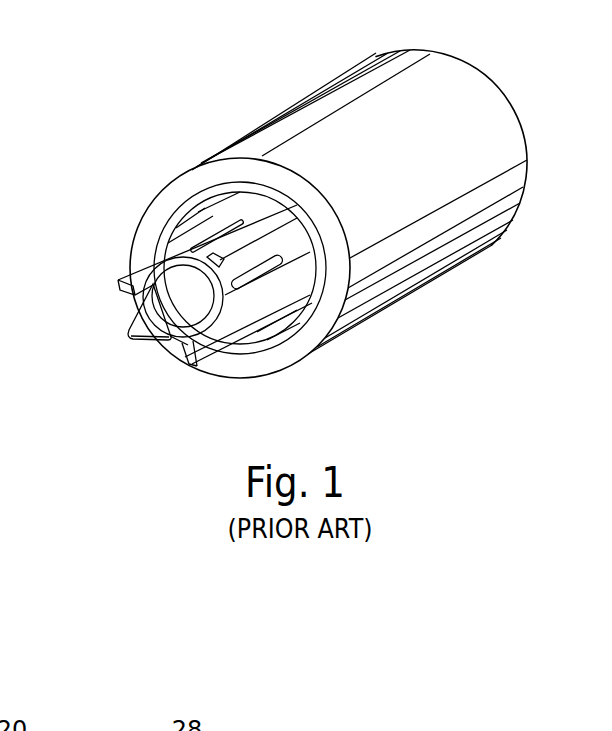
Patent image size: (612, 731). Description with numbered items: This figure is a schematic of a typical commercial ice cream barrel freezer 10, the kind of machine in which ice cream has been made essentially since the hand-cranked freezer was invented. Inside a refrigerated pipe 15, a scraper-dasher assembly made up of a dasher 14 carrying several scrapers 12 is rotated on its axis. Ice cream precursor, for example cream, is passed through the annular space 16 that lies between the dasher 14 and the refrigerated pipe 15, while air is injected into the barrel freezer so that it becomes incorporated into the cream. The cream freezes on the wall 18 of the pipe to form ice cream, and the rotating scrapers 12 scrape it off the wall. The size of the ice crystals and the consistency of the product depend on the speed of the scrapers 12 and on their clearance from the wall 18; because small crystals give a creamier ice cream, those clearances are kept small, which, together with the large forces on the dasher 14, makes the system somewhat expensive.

The commercial ice cream barrel freezer 10 is at (144, 76).
The scrapers 12 is at (192, 364).
The dasher 14 is at (238, 307).
The refrigerated pipe 15 is at (312, 323).
The annular space 16 is at (198, 225).
The wall 18 is at (287, 332).